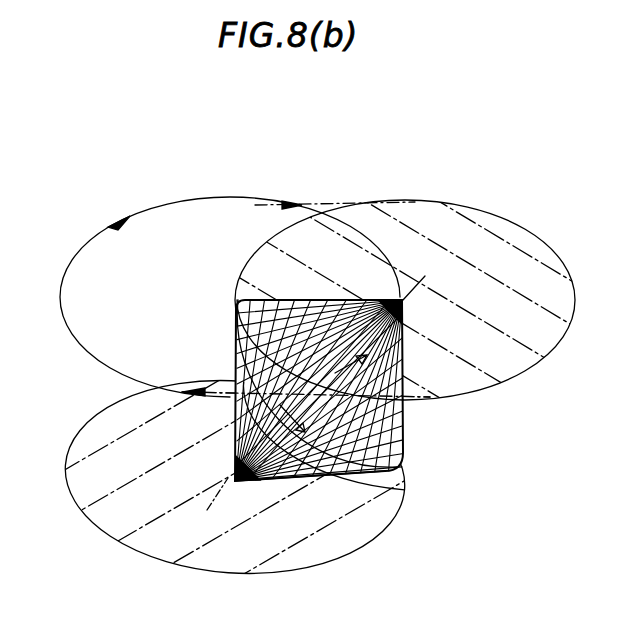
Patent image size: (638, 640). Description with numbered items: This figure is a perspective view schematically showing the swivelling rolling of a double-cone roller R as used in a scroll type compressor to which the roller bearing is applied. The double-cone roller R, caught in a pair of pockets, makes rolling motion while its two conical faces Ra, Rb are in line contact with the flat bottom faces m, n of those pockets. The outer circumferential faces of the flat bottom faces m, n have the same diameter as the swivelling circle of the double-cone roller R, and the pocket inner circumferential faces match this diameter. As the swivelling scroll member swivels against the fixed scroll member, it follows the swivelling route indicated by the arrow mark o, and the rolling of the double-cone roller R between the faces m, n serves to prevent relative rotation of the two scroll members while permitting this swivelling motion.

The double-cone roller R is at (79, 160).
The conical face Ra is at (327, 300).
The conical face Rb is at (308, 473).
The arrow mark o is at (168, 205).
The flat bottom face m is at (519, 229).
The flat bottom face n is at (403, 500).